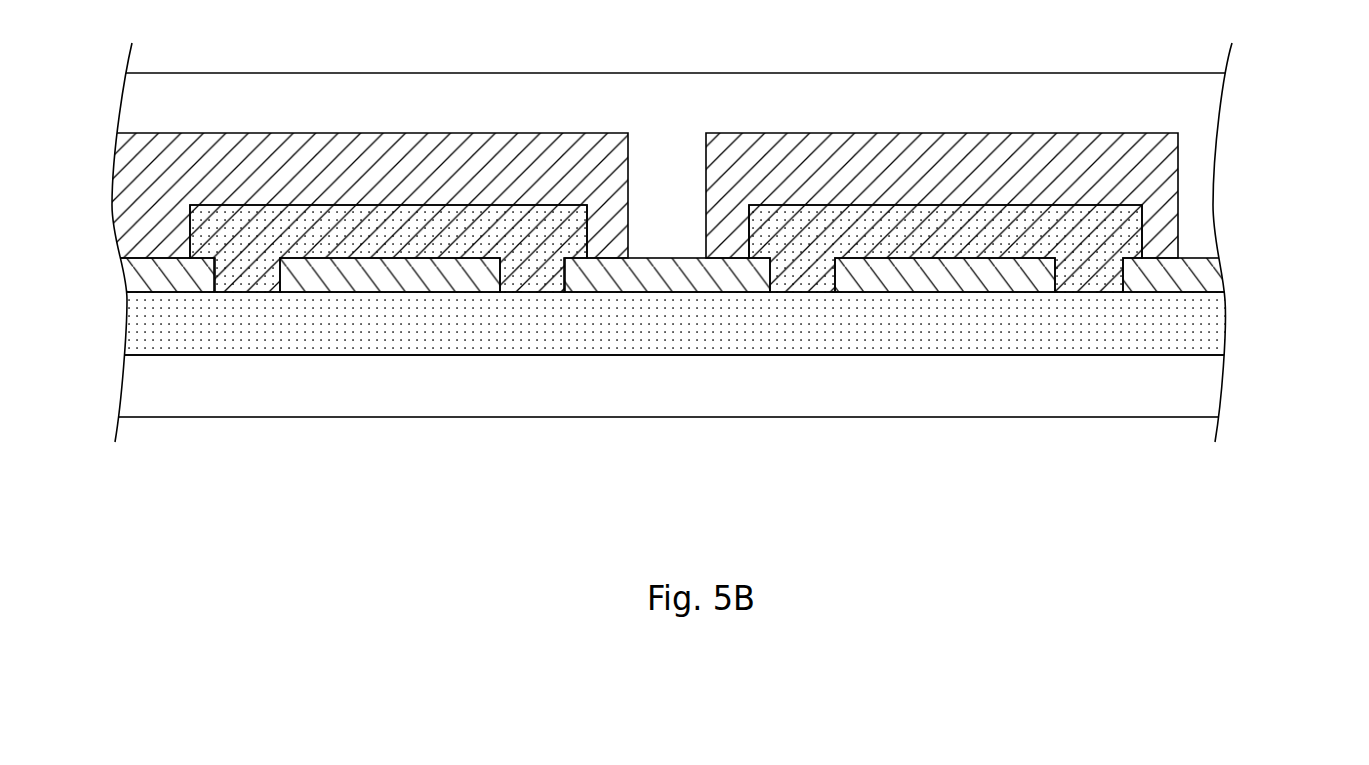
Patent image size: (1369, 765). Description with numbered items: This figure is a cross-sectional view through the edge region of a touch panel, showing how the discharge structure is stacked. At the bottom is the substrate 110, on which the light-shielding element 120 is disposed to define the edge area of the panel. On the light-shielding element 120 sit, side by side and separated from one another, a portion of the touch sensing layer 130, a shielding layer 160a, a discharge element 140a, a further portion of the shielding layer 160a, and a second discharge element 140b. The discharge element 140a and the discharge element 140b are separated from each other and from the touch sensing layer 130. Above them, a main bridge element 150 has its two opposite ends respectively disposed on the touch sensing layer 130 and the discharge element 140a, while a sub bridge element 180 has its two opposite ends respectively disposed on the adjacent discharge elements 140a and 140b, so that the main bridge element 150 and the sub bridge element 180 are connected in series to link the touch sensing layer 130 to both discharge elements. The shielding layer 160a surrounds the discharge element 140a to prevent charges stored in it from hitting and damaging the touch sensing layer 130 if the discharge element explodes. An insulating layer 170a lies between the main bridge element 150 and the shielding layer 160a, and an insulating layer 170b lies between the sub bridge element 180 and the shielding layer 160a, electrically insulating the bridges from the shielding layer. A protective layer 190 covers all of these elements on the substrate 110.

The substrate 110 is at (1198, 387).
The light-shielding element 120 is at (1198, 328).
The touch sensing layer 130 is at (175, 277).
The discharge element 140a is at (658, 280).
The discharge element 140b is at (1198, 273).
The main bridge element 150 is at (168, 166).
The shielding layer 160a is at (430, 280).
The insulating layer 170a is at (243, 280).
The insulating layer 170b is at (803, 280).
The sub bridge element 180 is at (1088, 188).
The protective layer 190 is at (1198, 130).